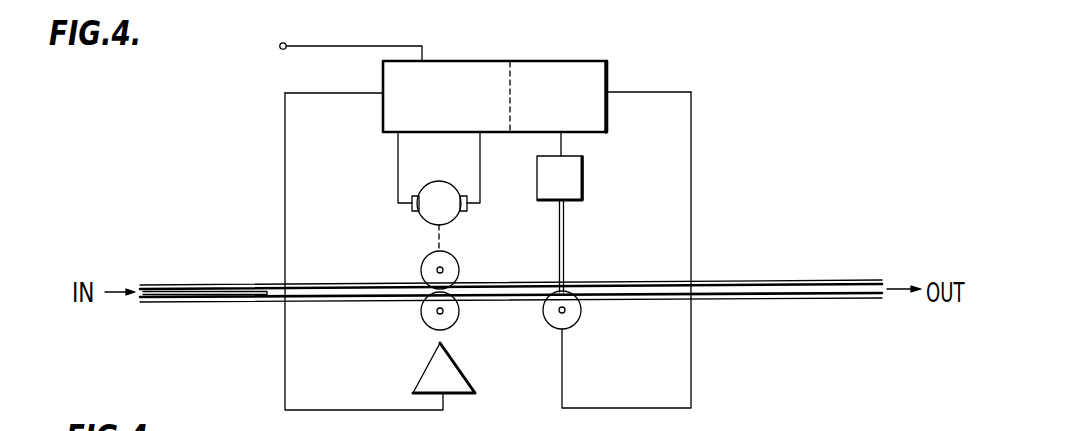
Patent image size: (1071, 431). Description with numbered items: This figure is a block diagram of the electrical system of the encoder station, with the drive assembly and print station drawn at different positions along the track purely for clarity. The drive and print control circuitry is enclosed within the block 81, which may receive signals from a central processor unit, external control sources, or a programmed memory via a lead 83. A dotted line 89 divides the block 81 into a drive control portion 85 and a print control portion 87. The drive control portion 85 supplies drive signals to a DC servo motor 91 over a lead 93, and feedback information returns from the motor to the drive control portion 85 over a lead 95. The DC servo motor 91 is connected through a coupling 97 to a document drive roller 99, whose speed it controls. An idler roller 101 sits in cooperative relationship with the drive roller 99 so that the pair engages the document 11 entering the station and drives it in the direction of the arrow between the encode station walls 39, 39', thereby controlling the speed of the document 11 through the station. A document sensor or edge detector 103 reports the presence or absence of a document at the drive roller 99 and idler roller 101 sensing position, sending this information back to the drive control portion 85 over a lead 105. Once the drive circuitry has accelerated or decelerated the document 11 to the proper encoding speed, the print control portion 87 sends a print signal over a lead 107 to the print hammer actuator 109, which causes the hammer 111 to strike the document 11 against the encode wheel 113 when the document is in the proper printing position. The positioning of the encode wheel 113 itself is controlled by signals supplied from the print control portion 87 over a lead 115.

The document 11 is at (244, 291).
The encode station wall 39 is at (511, 250).
The encode station wall 39' is at (511, 327).
The drive and print control block 81 is at (445, 61).
The lead 83 is at (337, 47).
The drive control portion 85 is at (383, 109).
The print control portion 87 is at (607, 73).
The dotted line 89 is at (513, 61).
The DC servo motor 91 is at (457, 185).
The lead 93 is at (398, 183).
The lead 95 is at (482, 163).
The coupling 97 is at (443, 240).
The document drive roller 99 is at (428, 262).
The idler roller 101 is at (430, 327).
The document sensor or edge detector 103 is at (462, 365).
The lead 105 is at (285, 133).
The lead 107 is at (561, 143).
The print hammer actuator 109 is at (584, 183).
The hammer 111 is at (564, 243).
The encode wheel 113 is at (565, 329).
The lead 115 is at (691, 107).